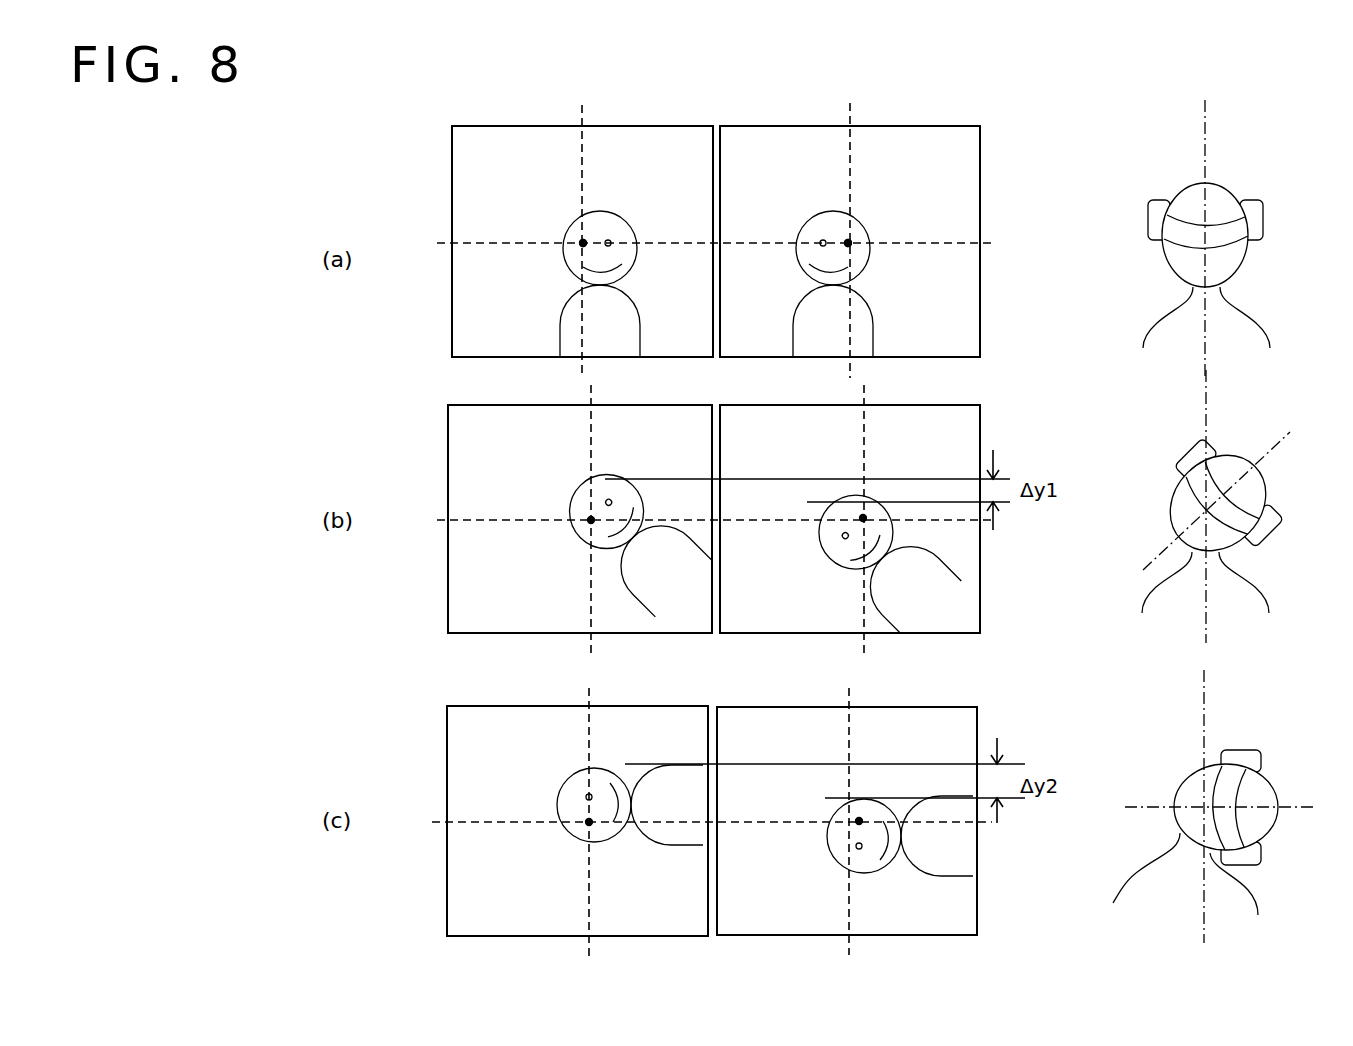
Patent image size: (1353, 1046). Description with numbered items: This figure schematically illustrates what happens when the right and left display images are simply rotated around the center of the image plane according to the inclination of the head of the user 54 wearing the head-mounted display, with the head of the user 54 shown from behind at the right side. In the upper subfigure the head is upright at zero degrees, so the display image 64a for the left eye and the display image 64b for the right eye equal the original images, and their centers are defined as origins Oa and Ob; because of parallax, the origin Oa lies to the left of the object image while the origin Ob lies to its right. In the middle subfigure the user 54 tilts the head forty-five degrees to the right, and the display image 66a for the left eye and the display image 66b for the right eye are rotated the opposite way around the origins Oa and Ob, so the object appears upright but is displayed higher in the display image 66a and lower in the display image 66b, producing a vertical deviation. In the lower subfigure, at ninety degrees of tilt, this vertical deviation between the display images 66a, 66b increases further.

The display image for the left eye 64a is at (452, 177).
The display image for the right eye 64b is at (980, 170).
The display image for the left eye 66a is at (448, 447).
The display image for the right eye 66b is at (980, 405).
The user 54 is at (1238, 185).
The origin of the left-eye image plane Oa is at (580, 241).
The origin of the right-eye image plane Ob is at (850, 242).